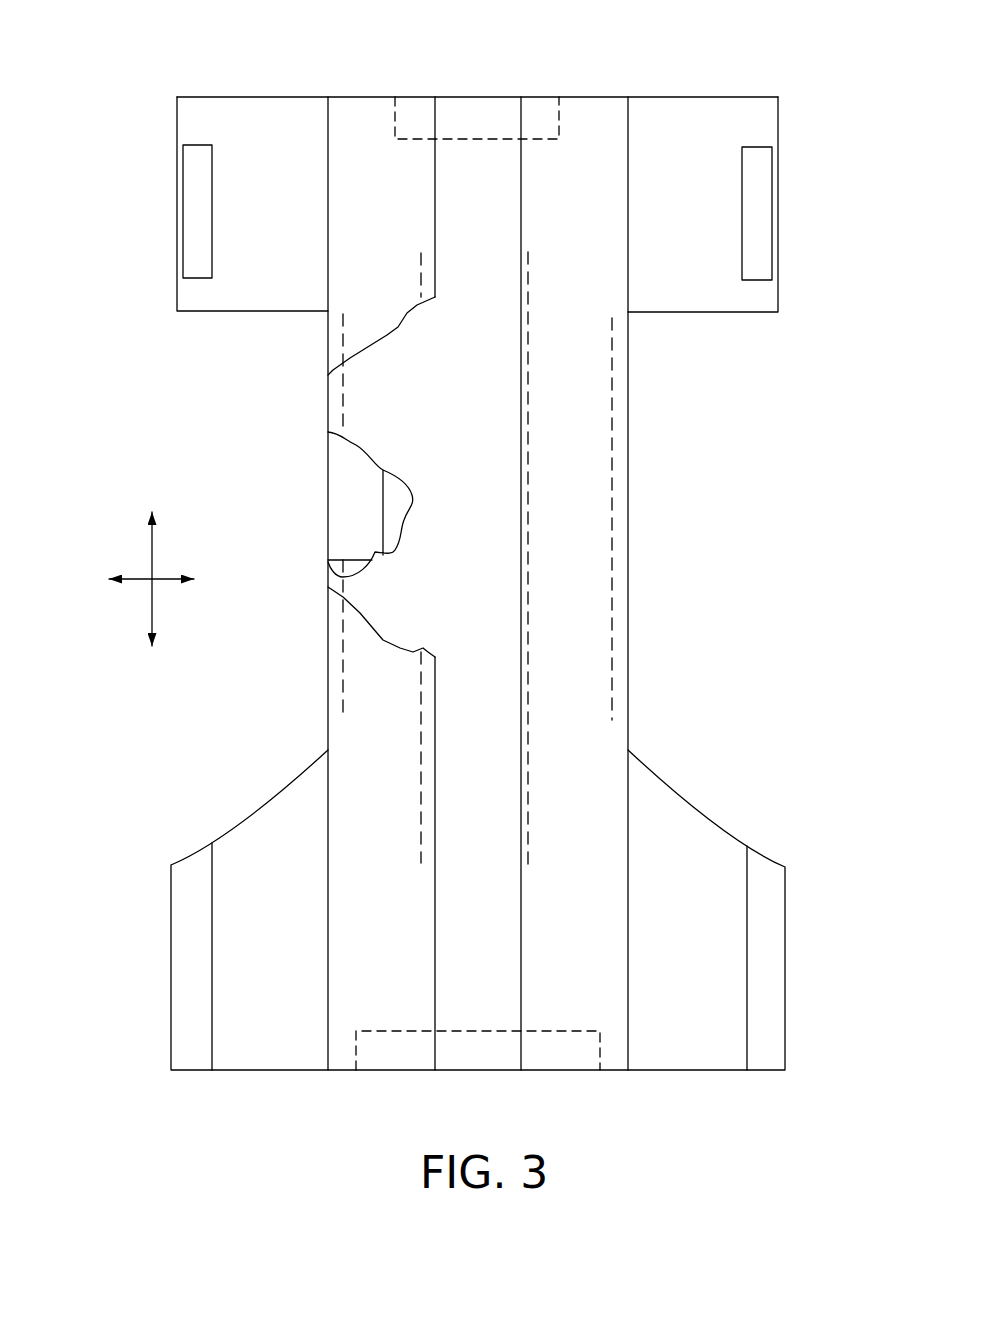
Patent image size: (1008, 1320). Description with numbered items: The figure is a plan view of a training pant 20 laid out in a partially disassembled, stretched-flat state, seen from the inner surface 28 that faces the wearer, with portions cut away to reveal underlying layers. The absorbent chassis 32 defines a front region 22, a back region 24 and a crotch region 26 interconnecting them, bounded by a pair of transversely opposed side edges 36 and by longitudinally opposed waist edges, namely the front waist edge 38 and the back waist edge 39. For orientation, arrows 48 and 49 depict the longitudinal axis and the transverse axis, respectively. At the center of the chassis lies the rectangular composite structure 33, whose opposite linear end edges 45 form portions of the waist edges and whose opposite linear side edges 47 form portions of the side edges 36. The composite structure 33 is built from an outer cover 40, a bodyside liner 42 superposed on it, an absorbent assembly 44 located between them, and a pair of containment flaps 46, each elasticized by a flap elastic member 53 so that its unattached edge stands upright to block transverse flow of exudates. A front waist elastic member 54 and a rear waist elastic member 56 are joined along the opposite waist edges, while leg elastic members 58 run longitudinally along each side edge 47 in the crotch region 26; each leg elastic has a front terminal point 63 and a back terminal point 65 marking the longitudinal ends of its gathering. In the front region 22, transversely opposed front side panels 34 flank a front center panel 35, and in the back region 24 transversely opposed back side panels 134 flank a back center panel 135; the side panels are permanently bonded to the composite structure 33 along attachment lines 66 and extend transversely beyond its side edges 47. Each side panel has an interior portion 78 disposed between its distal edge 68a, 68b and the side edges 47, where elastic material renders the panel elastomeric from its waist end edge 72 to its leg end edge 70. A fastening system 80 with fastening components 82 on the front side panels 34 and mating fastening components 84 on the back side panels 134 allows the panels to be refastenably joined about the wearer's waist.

The training pant 20 is at (243, 96).
The front region 22 is at (173, 144).
The back region 24 is at (762, 831).
The crotch region 26 is at (645, 633).
The inner surface 28 is at (677, 1060).
The absorbent chassis 32 is at (632, 602).
The rectangular composite structure 33 is at (628, 200).
The front side panels 34 is at (227, 237).
The front center panel 35 is at (408, 155).
The side edges 36 is at (328, 673).
The front waist edge 38 is at (378, 97).
The back waist edge 39 is at (345, 1070).
The outer cover 40 is at (343, 577).
The bodyside liner 42 is at (433, 419).
The absorbent assembly 44 is at (390, 527).
The linear end edges 45 is at (602, 97).
The containment flaps 46 is at (423, 187).
The linear side edges 47 is at (328, 177).
The longitudinal axis arrow 48 is at (152, 550).
The transverse axis arrow 49 is at (133, 579).
The flap elastic member 53 is at (421, 257).
The front waist elastic member 54 is at (485, 97).
The rear waist elastic member 56 is at (572, 1058).
The leg elastic members 58 is at (345, 415).
The front terminal point 63 is at (345, 306).
The back terminal point 65 is at (350, 724).
The attachment lines 66 is at (328, 257).
The distal edge of front side panel 68a is at (177, 273).
The distal edge of back side panel 68b is at (171, 1024).
The leg end edge 70 is at (288, 311).
The waist end edge 72 is at (290, 97).
The interior portion 78 is at (722, 218).
The fastening system 80 is at (779, 198).
The fastening components 82 is at (183, 202).
The mating fastening components 84 is at (193, 933).
The back side panels 134 is at (241, 945).
The back center panel 135 is at (391, 998).